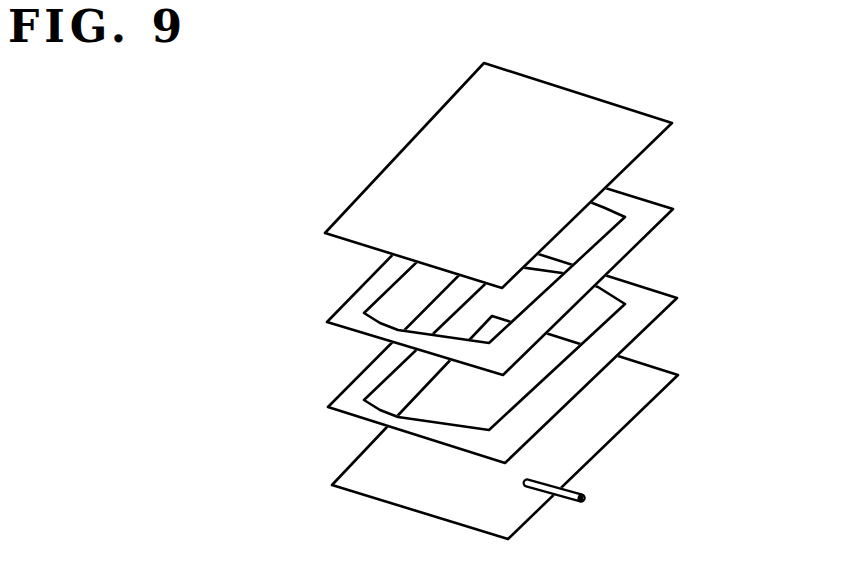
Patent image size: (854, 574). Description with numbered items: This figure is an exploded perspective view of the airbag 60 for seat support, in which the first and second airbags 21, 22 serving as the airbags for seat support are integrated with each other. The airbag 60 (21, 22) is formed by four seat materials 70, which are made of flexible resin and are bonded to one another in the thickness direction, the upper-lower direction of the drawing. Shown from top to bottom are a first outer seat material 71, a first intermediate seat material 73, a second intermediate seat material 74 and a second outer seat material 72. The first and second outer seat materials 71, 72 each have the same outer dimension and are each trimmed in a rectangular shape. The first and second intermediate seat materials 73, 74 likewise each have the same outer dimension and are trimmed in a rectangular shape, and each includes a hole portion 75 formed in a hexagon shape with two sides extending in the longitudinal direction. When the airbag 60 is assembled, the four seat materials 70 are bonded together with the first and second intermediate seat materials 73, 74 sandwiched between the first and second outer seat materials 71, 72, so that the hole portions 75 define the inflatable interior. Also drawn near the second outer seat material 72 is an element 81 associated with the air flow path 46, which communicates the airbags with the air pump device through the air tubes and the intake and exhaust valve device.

The airbag for seat support 60 is at (282, 126).
The first airbag 21 is at (522, 301).
The second airbag 22 is at (522, 301).
The seat materials 70 is at (522, 301).
The first outer seat material 71 is at (648, 107).
The second outer seat material 72 is at (655, 362).
The first intermediate seat material 73 is at (650, 195).
The second intermediate seat material 74 is at (653, 283).
The hole portion 75 is at (383, 290).
The pin 81 is at (617, 492).
The air flow path 46 is at (584, 497).